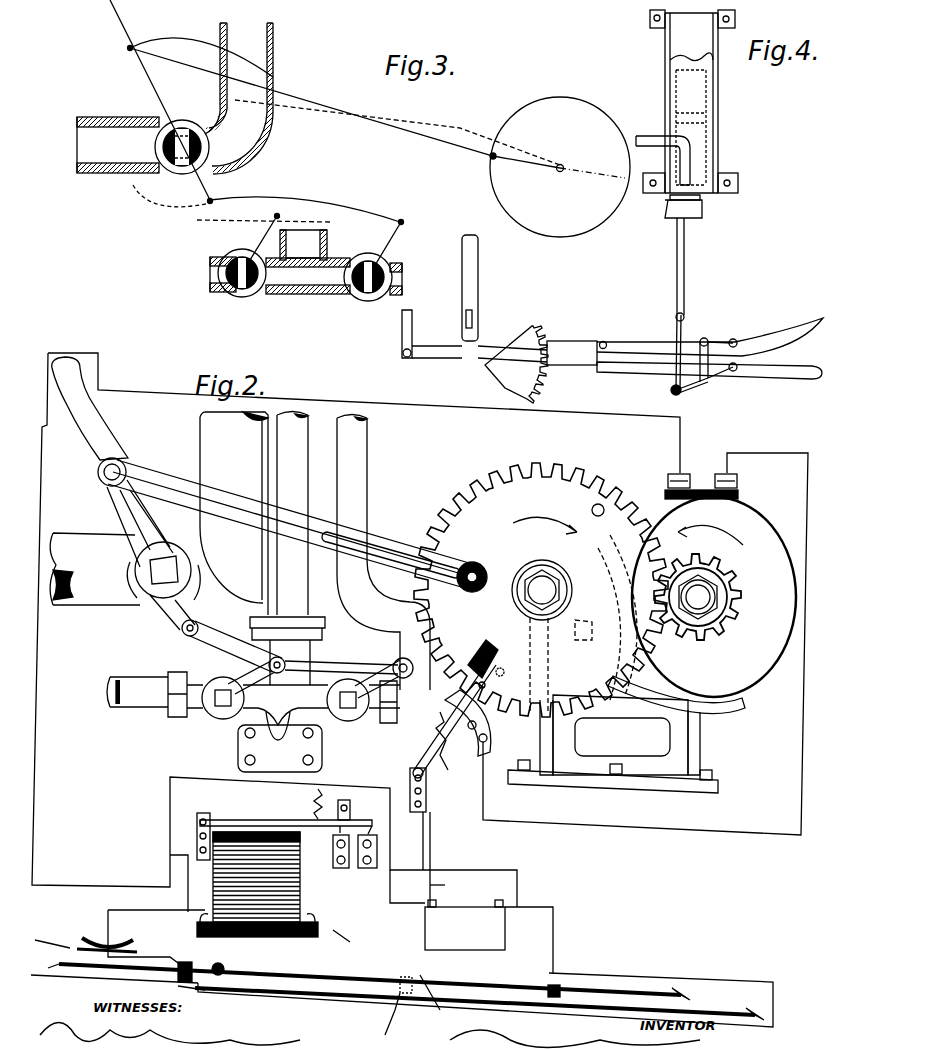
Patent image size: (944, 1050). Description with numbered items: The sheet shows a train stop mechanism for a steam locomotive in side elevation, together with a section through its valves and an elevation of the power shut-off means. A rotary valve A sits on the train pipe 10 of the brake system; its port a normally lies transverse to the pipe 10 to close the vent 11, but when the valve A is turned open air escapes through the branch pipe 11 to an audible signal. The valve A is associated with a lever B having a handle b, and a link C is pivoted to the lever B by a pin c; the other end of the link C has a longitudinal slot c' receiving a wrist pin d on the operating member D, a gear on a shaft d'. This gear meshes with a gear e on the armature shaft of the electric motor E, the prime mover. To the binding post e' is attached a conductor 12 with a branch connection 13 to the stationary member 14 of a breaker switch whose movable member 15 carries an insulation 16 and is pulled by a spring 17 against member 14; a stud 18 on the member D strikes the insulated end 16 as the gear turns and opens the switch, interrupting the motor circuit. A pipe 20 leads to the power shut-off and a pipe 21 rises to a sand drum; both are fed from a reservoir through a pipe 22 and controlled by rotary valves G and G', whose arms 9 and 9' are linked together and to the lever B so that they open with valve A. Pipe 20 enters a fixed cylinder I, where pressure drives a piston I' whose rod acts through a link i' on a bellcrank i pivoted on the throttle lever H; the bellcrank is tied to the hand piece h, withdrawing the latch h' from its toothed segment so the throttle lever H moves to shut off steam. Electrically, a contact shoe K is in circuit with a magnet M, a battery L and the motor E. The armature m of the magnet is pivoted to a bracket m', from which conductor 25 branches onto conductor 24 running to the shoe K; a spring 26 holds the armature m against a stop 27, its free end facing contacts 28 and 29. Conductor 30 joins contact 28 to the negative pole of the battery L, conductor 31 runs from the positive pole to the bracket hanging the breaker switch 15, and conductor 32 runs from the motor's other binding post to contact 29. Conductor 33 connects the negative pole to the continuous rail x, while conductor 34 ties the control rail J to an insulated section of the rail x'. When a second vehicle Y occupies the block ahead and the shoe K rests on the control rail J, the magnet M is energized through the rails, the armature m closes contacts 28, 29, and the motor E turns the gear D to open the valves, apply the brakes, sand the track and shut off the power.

In FIG. 3, the train pipe 10 is at (95, 173).
In FIG. 2, the train pipe 10 is at (85, 605).
In FIG. 3, the vent outlet 11 is at (250, 42).
In FIG. 3, the valve A is at (150, 147).
In FIG. 2, the valve A is at (140, 600).
In FIG. 3, the port a is at (183, 128).
In FIG. 3, the pipe 20 is at (215, 292).
In FIG. 4, the pipe 20 is at (640, 135).
In FIG. 2, the pipe 20 is at (137, 708).
In FIG. 3, the pipe 21 is at (395, 262).
In FIG. 2, the pipe 21 is at (370, 450).
In FIG. 3, the pipe 22 is at (336, 240).
In FIG. 2, the pipe 22 is at (310, 445).
In FIG. 3, the valve G is at (243, 290).
In FIG. 2, the valve G is at (219, 715).
In FIG. 3, the valve G' is at (358, 293).
In FIG. 2, the valve G' is at (348, 722).
In FIG. 4, the cylinder I is at (678, 114).
In FIG. 4, the piston I' is at (714, 127).
In FIG. 4, the link i' is at (672, 372).
In FIG. 4, the bellcrank i is at (704, 377).
In FIG. 4, the hand piece h is at (612, 340).
In FIG. 4, the latch h' is at (572, 330).
In FIG. 4, the throttle lever H is at (760, 378).
In FIG. 2, the handle b is at (85, 377).
In FIG. 2, the pin c is at (123, 460).
In FIG. 2, the lever B is at (110, 508).
In FIG. 2, the link C is at (233, 500).
In FIG. 2, the longitudinal slot c' is at (391, 541).
In FIG. 2, the wrist pin d is at (472, 560).
In FIG. 2, the shaft d' is at (548, 582).
In FIG. 2, the operating member D is at (545, 485).
In FIG. 2, the stud 18 is at (592, 508).
In FIG. 2, the electric motor E is at (770, 530).
In FIG. 2, the gear e is at (698, 615).
In FIG. 2, the binding post e' is at (745, 475).
In FIG. 2, the arm 9 is at (239, 675).
In FIG. 2, the arm 9' is at (341, 657).
In FIG. 2, the conductor 12 is at (802, 752).
In FIG. 2, the branch connection 13 is at (483, 770).
In FIG. 2, the stationary member 14 is at (492, 735).
In FIG. 2, the movable member 15 is at (465, 760).
In FIG. 2, the electrical insulation 16 is at (488, 660).
In FIG. 2, the spring 17 is at (455, 790).
In FIG. 2, the conductor 32 is at (475, 410).
In FIG. 2, the magnet M is at (300, 888).
In FIG. 2, the armature m is at (286, 812).
In FIG. 2, the bracket m' is at (179, 831).
In FIG. 2, the conductor 24 is at (148, 912).
In FIG. 2, the conductor 25 is at (170, 873).
In FIG. 2, the spring 26 is at (316, 808).
In FIG. 2, the stop 27 is at (350, 810).
In FIG. 2, the contact 28 is at (333, 855).
In FIG. 2, the contact 29 is at (377, 852).
In FIG. 2, the conductor 30 is at (470, 870).
In FIG. 2, the conductor 31 is at (451, 886).
In FIG. 2, the conductor 33 is at (555, 940).
In FIG. 2, the conductor 34 is at (175, 965).
In FIG. 2, the battery L is at (425, 924).
In FIG. 2, the contact shoe K is at (90, 935).
In FIG. 2, the control rail J is at (48, 933).
In FIG. 2, the continuous rail x is at (402, 995).
In FIG. 2, the insulated rail x' is at (384, 973).
In FIG. 2, the second vehicle Y is at (393, 1018).